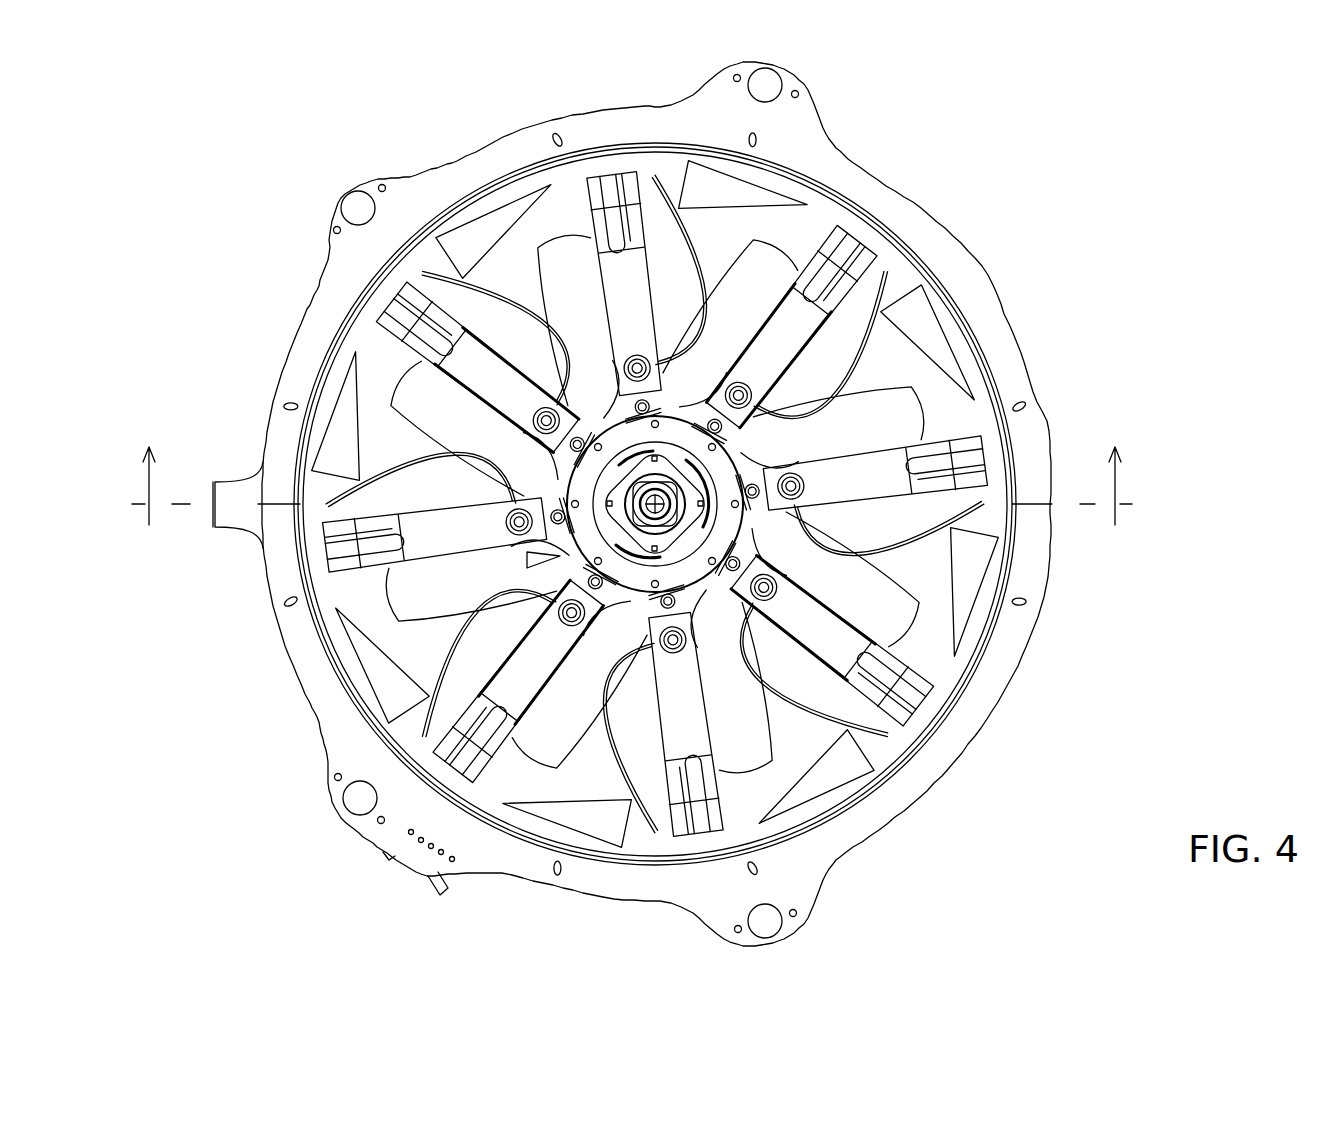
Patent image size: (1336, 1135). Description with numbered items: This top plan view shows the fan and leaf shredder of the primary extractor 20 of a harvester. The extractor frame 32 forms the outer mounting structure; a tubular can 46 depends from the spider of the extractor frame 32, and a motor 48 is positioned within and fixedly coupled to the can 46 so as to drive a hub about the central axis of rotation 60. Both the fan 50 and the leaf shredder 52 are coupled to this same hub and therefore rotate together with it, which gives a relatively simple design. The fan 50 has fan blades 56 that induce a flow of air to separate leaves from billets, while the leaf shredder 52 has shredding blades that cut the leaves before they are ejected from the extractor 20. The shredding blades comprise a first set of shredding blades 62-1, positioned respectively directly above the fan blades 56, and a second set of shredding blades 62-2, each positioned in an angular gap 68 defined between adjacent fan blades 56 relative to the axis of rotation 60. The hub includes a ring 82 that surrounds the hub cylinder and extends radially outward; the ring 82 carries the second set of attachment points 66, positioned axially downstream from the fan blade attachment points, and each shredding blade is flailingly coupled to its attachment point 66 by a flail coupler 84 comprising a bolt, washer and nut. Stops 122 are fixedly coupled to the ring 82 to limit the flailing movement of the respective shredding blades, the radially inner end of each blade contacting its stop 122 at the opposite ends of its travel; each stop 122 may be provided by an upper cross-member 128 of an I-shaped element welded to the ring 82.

The primary extractor 20 is at (356, 92).
The extractor frame 32 is at (903, 197).
The can 46 is at (565, 400).
The motor 48 is at (667, 462).
The fan 50 is at (893, 760).
The leaf shredder 52 is at (982, 392).
The fan blades 56 is at (853, 343).
The axis of rotation 60 is at (678, 545).
The first set of shredding blades 62-1 is at (797, 270).
The second set of shredding blades 62-2 is at (590, 225).
The second set of attachment points 66 is at (815, 440).
The angular gaps 68 is at (680, 195).
The ring 82 is at (523, 560).
The flail coupler 84 is at (640, 355).
The stops 122 is at (705, 355).
The upper cross-member 128 is at (797, 423).